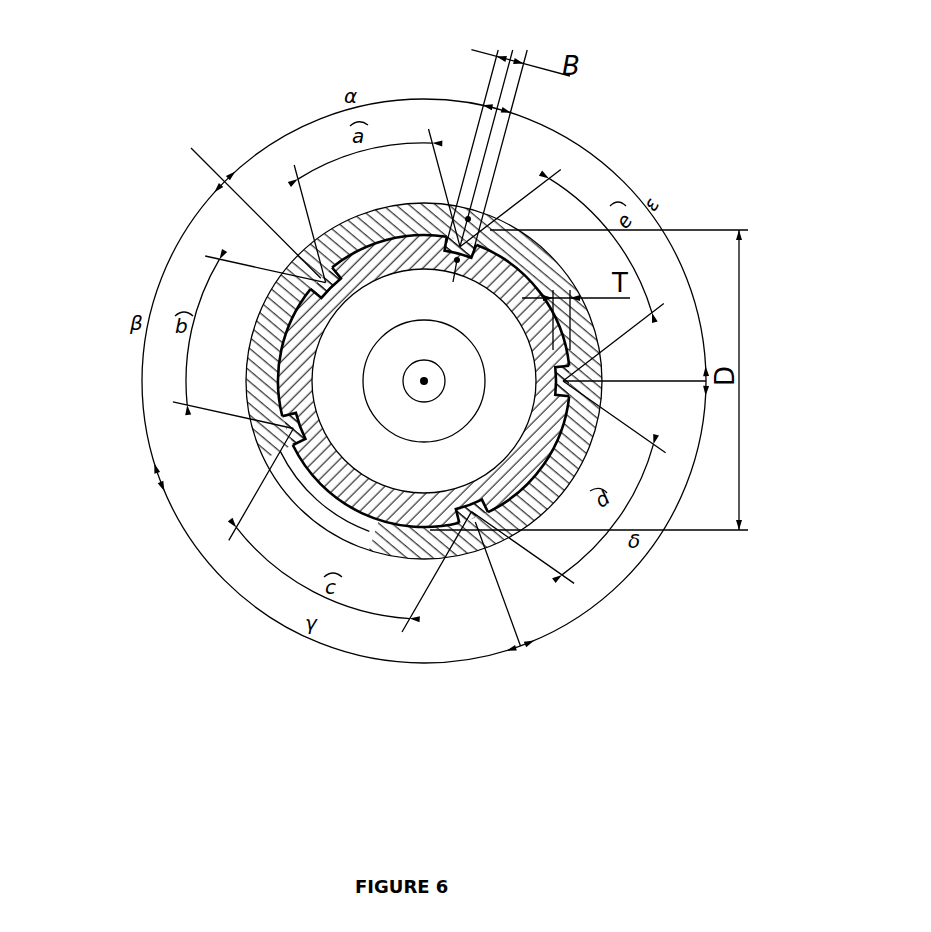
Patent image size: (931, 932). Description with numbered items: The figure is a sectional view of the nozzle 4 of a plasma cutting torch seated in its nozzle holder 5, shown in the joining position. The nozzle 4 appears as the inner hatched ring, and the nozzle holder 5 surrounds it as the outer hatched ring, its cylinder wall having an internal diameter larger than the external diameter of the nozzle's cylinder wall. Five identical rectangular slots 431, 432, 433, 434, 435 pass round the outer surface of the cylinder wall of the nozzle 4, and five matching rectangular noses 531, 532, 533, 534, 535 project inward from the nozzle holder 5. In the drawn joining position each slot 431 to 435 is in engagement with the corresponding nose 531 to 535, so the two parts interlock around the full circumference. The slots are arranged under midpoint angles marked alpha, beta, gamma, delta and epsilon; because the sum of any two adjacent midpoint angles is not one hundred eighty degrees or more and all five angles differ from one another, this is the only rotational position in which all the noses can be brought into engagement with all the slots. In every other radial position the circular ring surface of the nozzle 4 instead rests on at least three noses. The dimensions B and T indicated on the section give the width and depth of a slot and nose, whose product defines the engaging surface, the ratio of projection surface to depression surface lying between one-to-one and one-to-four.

The nozzle 4 is at (395, 248).
The nozzle holder 5 is at (432, 223).
The slot 431 is at (566, 388).
The slot 432 is at (480, 516).
The slot 433 is at (291, 433).
The slot 434 is at (322, 270).
The slot 435 is at (473, 229).
The nose 531 is at (568, 372).
The nose 532 is at (474, 506).
The nose 533 is at (283, 425).
The nose 534 is at (330, 282).
The nose 535 is at (456, 243).